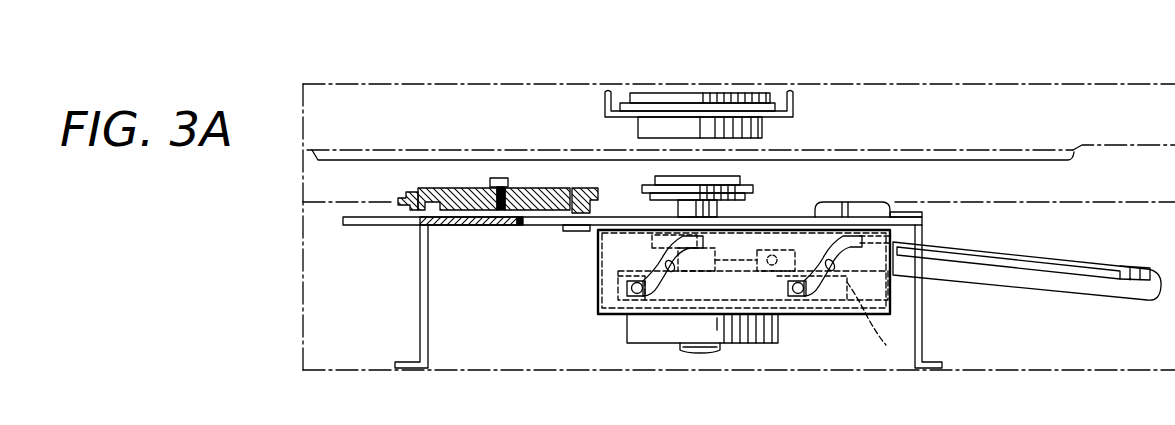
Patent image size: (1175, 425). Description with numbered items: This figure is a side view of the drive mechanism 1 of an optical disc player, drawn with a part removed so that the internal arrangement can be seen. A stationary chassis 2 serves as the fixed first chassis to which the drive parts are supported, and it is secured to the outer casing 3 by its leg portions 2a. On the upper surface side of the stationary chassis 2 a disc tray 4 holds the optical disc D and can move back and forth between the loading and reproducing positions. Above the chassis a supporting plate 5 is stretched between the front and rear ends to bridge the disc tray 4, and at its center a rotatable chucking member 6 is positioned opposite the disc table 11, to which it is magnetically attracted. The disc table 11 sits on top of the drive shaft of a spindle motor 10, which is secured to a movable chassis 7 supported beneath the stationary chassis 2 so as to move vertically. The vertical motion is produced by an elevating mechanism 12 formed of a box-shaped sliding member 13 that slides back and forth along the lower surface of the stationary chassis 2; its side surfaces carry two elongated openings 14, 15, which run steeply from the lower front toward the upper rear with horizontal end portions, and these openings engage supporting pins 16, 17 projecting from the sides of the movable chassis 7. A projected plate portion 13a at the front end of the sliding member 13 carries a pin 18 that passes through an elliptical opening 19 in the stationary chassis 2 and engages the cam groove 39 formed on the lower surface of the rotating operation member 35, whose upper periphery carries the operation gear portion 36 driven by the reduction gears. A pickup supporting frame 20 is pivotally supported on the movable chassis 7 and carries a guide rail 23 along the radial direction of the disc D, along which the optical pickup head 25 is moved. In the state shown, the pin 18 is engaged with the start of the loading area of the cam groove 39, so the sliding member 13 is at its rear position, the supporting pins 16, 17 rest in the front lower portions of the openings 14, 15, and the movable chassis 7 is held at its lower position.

The drive mechanism 1 is at (852, 127).
The stationary chassis 2 is at (465, 228).
The leg portions 2a is at (418, 306).
The outer casing 3 is at (437, 84).
The disc tray 4 is at (303, 185).
The supporting plate 5 is at (598, 100).
The chucking member 6 is at (712, 128).
The movable chassis 7 is at (873, 322).
The spindle motor 10 is at (752, 345).
The disc table 11 is at (738, 180).
The elevating mechanism 12 is at (583, 275).
The sliding member 13 is at (595, 303).
The projected plate portion 13a is at (556, 231).
The elongated opening 14 is at (663, 298).
The elongated opening 15 is at (823, 298).
The supporting pin 16 is at (637, 297).
The supporting pin 17 is at (798, 297).
The pin 18 is at (580, 188).
The elliptical opening 19 is at (525, 228).
The pickup supporting frame 20 is at (1018, 285).
The guide rail 23 is at (1048, 258).
The optical pickup head 25 is at (860, 203).
The rotating operation member 35 is at (470, 188).
The operation gear portion 36 is at (405, 192).
The cam groove 39 is at (551, 187).
The optical disc D is at (1026, 150).